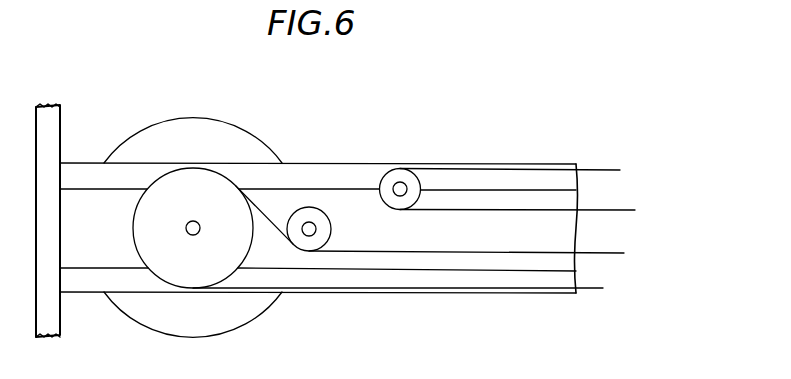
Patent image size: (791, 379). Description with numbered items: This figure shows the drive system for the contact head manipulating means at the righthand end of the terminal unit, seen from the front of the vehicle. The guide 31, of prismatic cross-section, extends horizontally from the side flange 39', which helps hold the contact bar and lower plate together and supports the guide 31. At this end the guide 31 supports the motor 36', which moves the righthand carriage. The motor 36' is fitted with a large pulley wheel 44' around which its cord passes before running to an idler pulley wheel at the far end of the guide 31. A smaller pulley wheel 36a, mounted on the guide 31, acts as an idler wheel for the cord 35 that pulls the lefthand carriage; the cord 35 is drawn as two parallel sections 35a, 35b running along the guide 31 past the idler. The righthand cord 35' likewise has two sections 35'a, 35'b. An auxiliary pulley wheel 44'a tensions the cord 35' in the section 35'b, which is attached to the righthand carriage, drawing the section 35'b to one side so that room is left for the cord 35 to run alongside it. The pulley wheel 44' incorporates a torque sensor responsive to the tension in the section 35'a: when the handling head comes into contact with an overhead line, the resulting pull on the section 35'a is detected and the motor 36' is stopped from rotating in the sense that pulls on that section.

The guide 31 is at (100, 255).
The cord 35 is at (566, 176).
The cord section 35a is at (626, 170).
The cord section 35b is at (640, 210).
The cord 35' is at (684, 285).
The cord section 35'a is at (426, 305).
The cord section 35'b is at (503, 242).
The motor 36' is at (200, 215).
The pulley wheel 36a is at (408, 180).
The side flange 39' is at (77, 214).
The pulley wheel 44' is at (193, 228).
The auxiliary pulley wheel 44'a is at (315, 218).